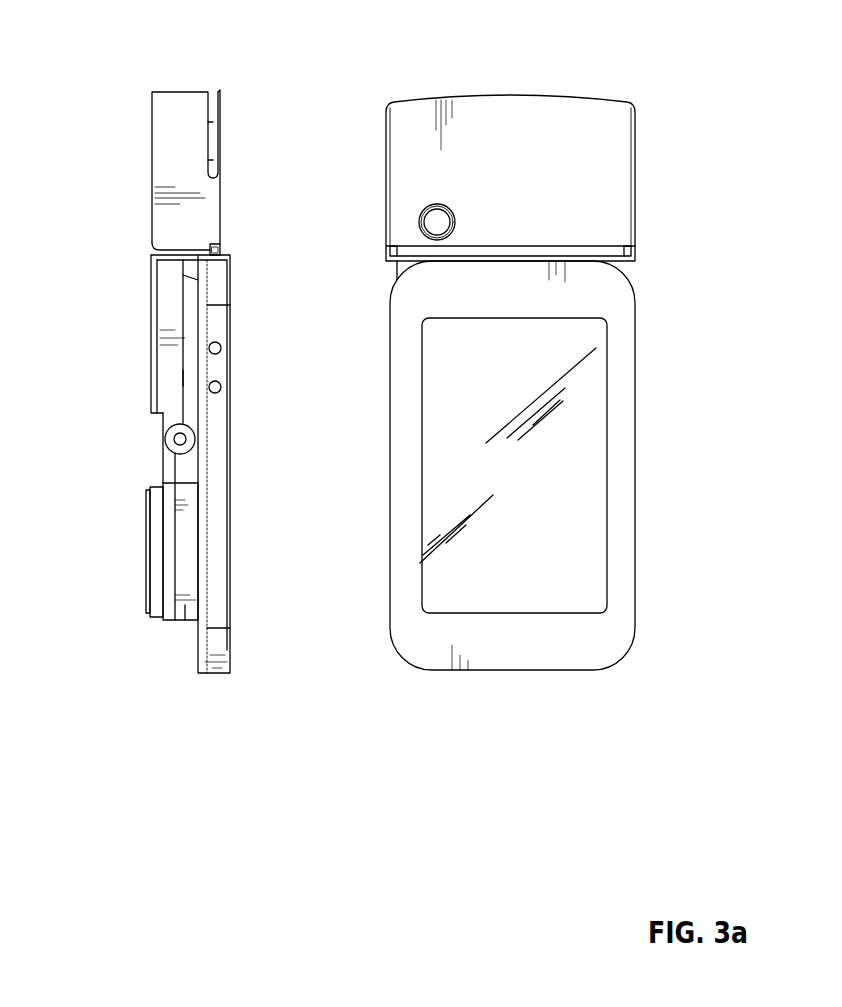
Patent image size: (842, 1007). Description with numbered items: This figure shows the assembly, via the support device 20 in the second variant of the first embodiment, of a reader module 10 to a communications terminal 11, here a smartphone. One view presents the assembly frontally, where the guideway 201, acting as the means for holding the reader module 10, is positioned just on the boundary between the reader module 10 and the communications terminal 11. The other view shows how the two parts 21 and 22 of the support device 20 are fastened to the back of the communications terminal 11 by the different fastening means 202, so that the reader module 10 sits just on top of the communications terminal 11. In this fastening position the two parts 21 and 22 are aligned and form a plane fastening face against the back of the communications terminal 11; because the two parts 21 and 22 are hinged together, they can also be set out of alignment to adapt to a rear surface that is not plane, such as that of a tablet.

The reader module 10 is at (222, 163).
The communications terminal 11 is at (230, 435).
The support device 20 is at (168, 305).
The first part of the support device 21 is at (160, 330).
The second part of the support device 22 is at (178, 548).
The guideway 201 is at (222, 253).
The fastening means 202 is at (183, 378).